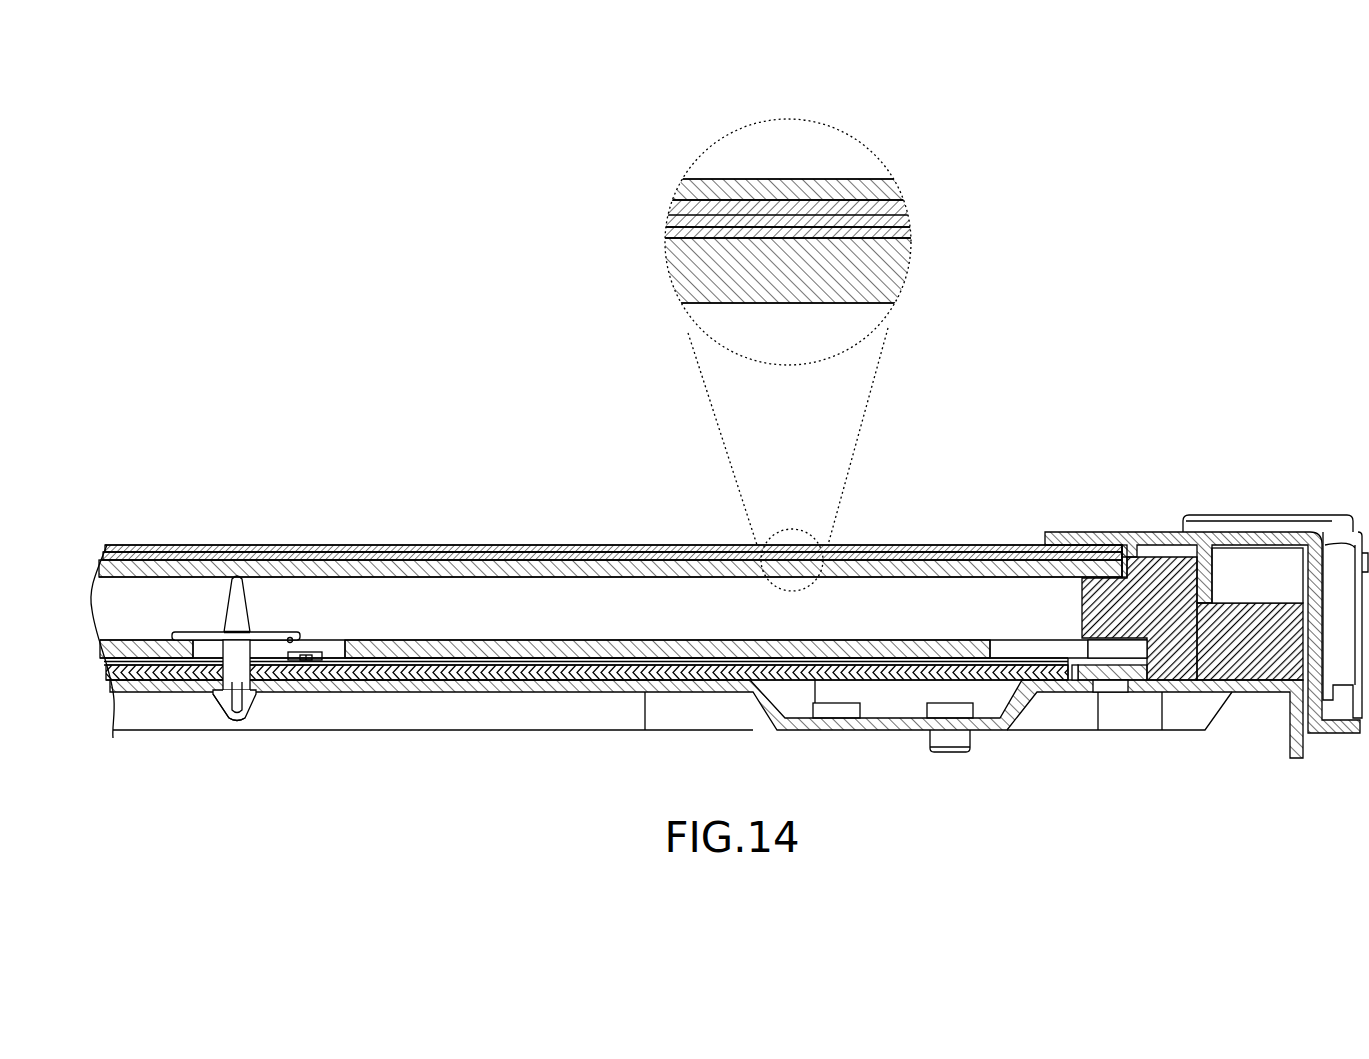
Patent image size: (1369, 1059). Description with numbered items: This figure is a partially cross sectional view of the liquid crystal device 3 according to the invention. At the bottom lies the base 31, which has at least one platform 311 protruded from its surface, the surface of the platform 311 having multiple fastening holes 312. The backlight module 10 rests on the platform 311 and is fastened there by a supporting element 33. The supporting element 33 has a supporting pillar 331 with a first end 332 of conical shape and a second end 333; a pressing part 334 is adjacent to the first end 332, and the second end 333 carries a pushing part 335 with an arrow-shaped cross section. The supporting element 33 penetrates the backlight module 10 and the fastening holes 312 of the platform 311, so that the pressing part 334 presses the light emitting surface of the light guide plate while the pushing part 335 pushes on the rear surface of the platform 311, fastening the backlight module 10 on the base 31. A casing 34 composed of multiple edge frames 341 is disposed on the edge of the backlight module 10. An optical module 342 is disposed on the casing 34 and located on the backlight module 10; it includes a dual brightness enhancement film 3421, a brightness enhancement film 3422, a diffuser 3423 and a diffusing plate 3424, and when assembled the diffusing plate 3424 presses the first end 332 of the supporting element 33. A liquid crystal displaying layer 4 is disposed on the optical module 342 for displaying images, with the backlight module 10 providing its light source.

The display module 3 is at (727, 59).
The liquid crystal displaying layer 4 is at (840, 185).
The backlight module 10 is at (566, 640).
The base 31 is at (856, 731).
The platform 311 is at (479, 692).
The fastening holes 312 is at (222, 717).
The supporting element 33 is at (259, 651).
The supporting pillar 331 is at (227, 657).
The first end 332 is at (237, 600).
The second end 333 is at (257, 698).
The pressing part 334 is at (292, 636).
The pushing part 335 is at (233, 721).
The casing 34 is at (1245, 511).
The edge frames 341 is at (1075, 532).
The optical module 342 is at (981, 397).
The dual brightness enhancement film 3421 is at (905, 200).
The brightness enhancement film 3422 is at (905, 217).
The diffuser 3423 is at (900, 233).
The diffusing plate 3424 is at (898, 266).